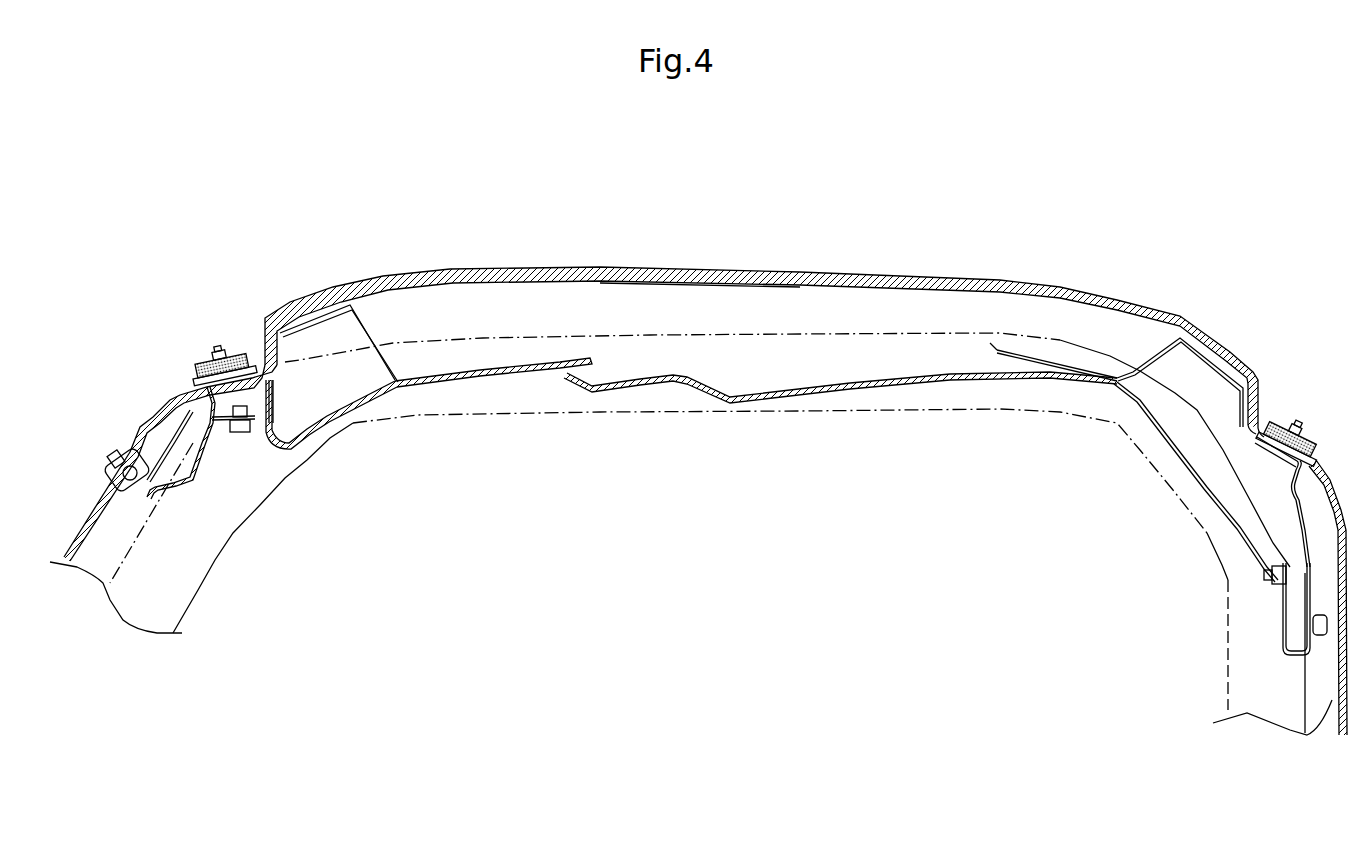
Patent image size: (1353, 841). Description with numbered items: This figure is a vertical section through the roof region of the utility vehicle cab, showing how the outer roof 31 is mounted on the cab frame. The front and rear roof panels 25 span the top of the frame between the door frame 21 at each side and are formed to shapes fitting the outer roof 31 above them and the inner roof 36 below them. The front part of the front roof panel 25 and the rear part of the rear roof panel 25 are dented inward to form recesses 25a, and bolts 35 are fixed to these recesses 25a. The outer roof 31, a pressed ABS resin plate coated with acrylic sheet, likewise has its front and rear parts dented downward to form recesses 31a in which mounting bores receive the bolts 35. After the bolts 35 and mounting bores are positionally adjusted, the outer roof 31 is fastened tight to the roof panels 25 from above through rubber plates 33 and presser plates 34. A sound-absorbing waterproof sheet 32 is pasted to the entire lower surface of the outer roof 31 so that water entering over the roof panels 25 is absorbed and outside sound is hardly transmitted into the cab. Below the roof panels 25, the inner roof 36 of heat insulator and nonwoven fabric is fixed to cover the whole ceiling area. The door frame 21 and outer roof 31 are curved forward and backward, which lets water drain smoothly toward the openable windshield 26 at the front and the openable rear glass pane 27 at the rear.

The door frame 21 is at (643, 412).
The roof panel 25 is at (380, 326).
The recess 25a is at (252, 388).
The windshield 26 is at (84, 513).
The rear glass pane 27 is at (1340, 727).
The outer roof 31 is at (668, 266).
The recess 31a is at (170, 398).
The sound-absorbing waterproof sheet 32 is at (708, 287).
The rubber plate 33 is at (196, 382).
The presser plate 34 is at (206, 360).
The bolt 35 is at (218, 345).
The inner roof 36 is at (816, 398).